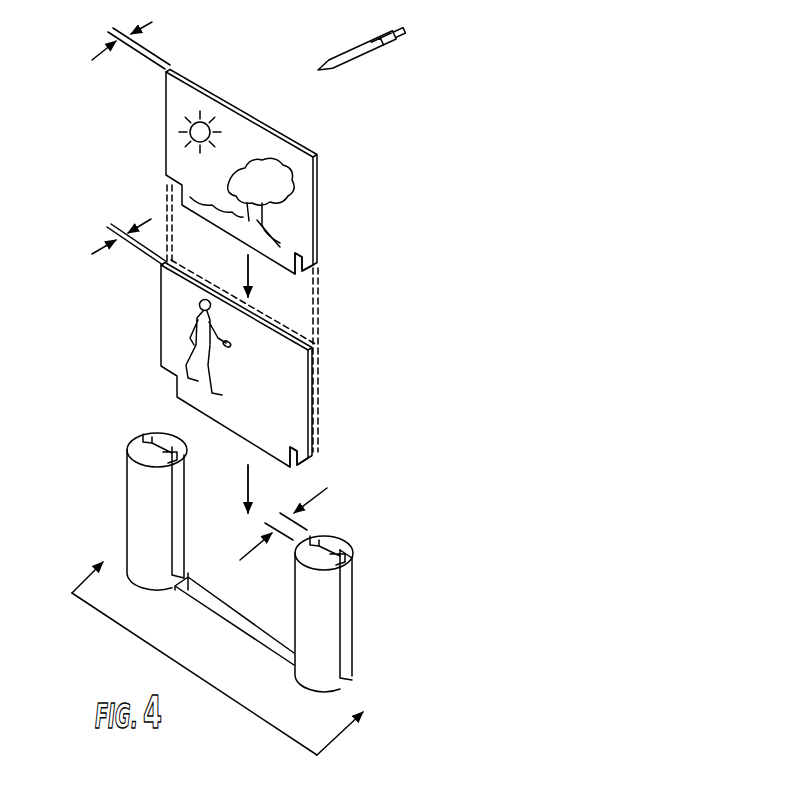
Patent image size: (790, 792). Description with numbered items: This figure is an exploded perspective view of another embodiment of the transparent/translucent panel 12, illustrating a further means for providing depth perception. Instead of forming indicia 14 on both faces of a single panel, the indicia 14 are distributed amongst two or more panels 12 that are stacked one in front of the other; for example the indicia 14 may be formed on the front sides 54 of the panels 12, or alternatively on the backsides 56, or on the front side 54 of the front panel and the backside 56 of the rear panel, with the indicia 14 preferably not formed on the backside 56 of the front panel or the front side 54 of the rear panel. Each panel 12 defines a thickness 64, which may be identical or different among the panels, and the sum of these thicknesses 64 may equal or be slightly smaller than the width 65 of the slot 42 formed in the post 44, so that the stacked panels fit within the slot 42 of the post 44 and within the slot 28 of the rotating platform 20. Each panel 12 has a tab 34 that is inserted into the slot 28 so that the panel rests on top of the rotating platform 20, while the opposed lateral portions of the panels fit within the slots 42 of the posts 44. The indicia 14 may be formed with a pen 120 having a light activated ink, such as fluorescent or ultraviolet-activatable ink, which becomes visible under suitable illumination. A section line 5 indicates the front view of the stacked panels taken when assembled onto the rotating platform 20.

The transparent/translucent panel 12 is at (351, 184).
The indicia 14 is at (262, 178).
The front side 54 is at (283, 137).
The backside 56 is at (300, 148).
The tab 34 is at (267, 247).
The thickness 64 is at (133, 33).
The pen 120 is at (385, 45).
The post 44 is at (89, 516).
The slot 42 is at (317, 538).
The slot width 65 is at (258, 548).
The slot 28 is at (236, 618).
The rotating platform 20 is at (191, 641).
The section line 5- 5 is at (227, 643).